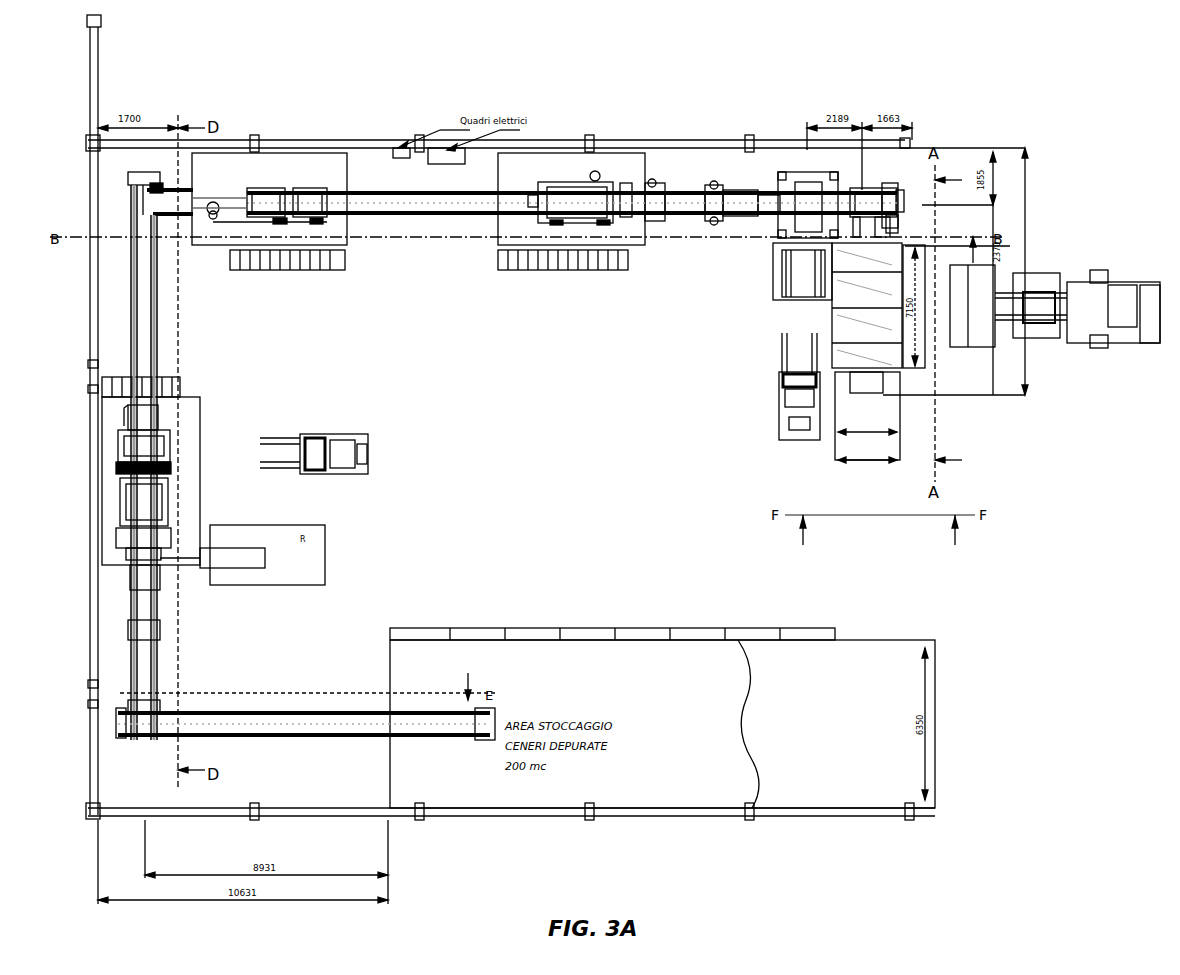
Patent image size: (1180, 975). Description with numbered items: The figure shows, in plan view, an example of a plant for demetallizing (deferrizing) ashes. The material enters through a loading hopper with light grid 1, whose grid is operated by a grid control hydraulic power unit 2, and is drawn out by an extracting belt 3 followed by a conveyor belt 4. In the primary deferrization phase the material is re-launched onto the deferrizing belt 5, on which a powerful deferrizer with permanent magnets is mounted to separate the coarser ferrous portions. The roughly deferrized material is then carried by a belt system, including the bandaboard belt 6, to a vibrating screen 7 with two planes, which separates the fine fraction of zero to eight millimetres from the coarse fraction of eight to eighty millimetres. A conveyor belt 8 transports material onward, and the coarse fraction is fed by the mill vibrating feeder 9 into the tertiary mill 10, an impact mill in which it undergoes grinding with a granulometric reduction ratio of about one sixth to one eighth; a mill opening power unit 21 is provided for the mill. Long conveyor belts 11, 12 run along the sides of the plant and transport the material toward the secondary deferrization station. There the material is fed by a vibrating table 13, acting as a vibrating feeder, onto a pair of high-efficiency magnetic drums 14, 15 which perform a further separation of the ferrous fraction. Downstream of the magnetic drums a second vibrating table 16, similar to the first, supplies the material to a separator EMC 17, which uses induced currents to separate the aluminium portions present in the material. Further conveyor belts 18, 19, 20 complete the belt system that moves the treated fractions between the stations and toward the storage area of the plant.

The loading hopper with light grid 1 is at (890, 355).
The grid control hydraulic power unit 2 is at (926, 417).
The extracting belt 3 is at (895, 190).
The conveyor belt 4 is at (857, 190).
The deferrizing belt 5 is at (805, 178).
The bandaboard belt 6 is at (680, 192).
The vibrating screen 7 is at (565, 200).
The conveyor belt 8 is at (372, 190).
The mill vibrating feeder 9 is at (300, 190).
The tertiary mill 10 is at (270, 190).
The conveyor belt 11 is at (175, 195).
The conveyor belt 12 is at (135, 333).
The vibrating table 13 is at (122, 430).
The magnetic drum 14 is at (118, 452).
The magnetic drum 15 is at (120, 468).
The vibrating table 16 is at (128, 500).
The separator EMC 17 is at (128, 538).
The conveyor belt 18 is at (134, 582).
The conveyor belt 19 is at (134, 640).
The conveyor belt 20 is at (185, 727).
The mill opening power unit 21 is at (234, 165).